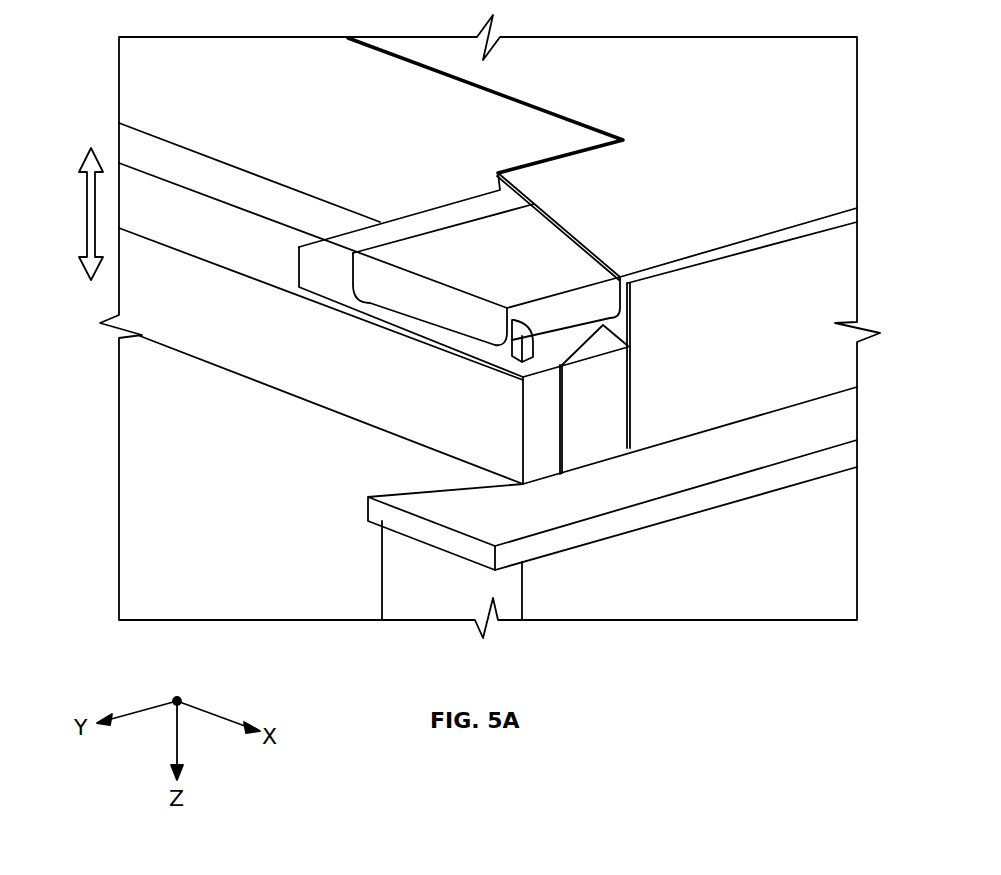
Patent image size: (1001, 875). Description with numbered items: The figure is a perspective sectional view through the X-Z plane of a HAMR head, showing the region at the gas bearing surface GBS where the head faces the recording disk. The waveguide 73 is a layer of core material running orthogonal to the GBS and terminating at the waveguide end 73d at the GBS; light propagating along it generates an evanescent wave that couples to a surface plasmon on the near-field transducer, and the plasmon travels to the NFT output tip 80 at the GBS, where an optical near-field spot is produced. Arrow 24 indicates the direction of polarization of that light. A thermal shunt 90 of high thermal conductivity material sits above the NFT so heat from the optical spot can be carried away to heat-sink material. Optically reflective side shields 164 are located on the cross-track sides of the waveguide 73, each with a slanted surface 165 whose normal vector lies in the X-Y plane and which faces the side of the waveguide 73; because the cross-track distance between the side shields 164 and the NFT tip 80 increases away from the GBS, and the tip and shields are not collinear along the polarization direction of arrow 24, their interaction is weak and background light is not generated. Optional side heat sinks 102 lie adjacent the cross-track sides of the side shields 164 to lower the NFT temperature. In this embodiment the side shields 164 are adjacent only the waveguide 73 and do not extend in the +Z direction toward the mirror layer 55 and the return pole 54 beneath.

The arrow 24 is at (83, 217).
The return pole 54 is at (808, 553).
The mirror layer 55 is at (828, 433).
The waveguide 73 is at (272, 350).
The waveguide end 73d is at (528, 428).
The NFT output tip 80 is at (508, 350).
The thermal shunt 90 is at (460, 245).
The side heat sinks 102 is at (787, 275).
The gas bearing surface GBS is at (827, 300).
The optically reflective side shield 164 is at (608, 407).
The slanted surface 165 is at (585, 342).